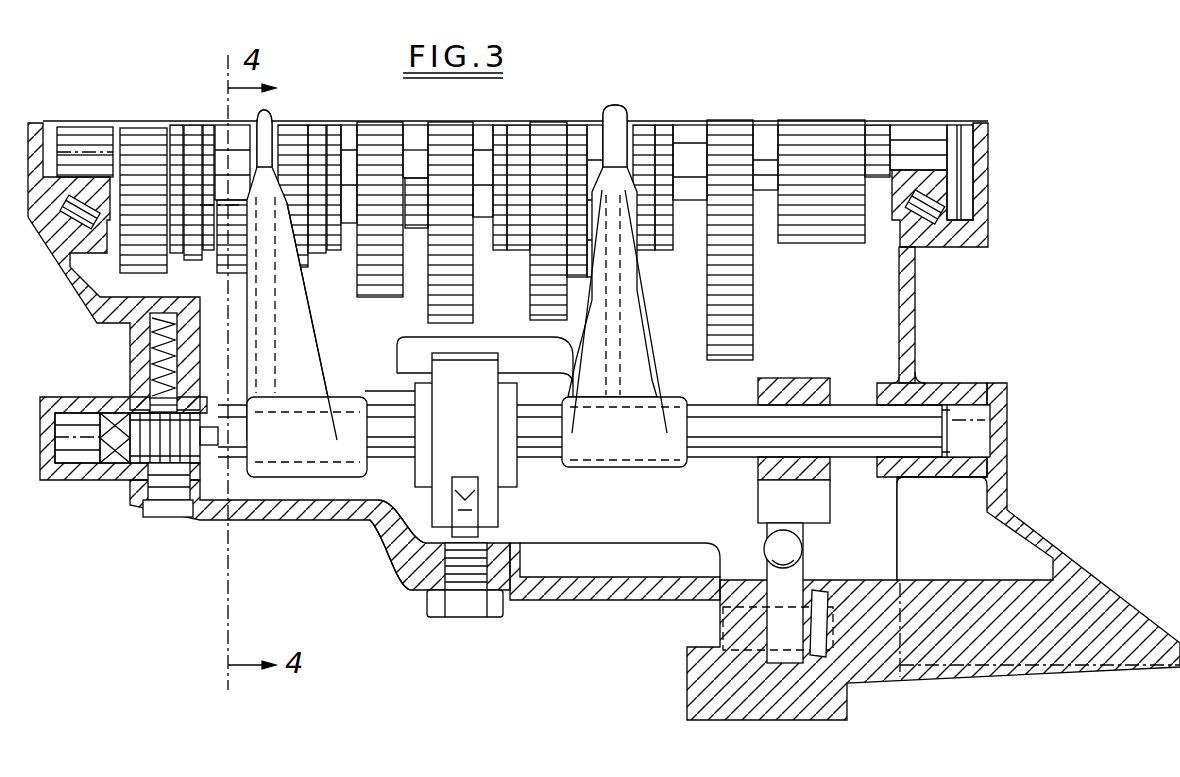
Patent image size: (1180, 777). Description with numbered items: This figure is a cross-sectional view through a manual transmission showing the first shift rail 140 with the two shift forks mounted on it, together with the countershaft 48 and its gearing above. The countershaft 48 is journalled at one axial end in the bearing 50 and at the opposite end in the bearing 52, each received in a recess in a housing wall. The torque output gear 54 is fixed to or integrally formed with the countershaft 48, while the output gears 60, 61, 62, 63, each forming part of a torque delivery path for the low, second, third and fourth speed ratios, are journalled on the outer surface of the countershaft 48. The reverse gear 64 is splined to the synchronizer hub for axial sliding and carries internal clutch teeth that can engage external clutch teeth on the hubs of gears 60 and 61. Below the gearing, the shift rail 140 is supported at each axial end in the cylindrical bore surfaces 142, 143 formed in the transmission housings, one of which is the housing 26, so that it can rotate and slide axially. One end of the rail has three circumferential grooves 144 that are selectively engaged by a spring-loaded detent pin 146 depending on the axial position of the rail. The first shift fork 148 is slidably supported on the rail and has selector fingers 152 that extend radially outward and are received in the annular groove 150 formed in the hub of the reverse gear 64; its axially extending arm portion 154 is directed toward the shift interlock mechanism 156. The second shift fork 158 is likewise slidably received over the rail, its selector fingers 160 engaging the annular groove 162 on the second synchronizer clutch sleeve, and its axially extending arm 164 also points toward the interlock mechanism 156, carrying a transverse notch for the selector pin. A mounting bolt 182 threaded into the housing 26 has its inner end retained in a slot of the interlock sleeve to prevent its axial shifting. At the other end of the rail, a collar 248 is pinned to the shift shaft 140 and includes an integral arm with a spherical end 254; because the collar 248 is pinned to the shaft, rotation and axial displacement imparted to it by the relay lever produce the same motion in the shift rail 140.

The transmission housing 26 is at (310, 520).
The countershaft 48 is at (73, 142).
The bearing 50 is at (930, 215).
The bearing 52 is at (83, 215).
The torque output gear 54 is at (833, 235).
The output gear 60 is at (752, 312).
The output gear 61 is at (455, 137).
The output gear 62 is at (383, 135).
The output gear 63 is at (163, 272).
The reverse gear 64 is at (552, 137).
The first shift rail 140 is at (723, 450).
The cylindrical bore surface 142 is at (975, 415).
The cylindrical bore surface 143 is at (77, 460).
The circumferential grooves 144 is at (160, 500).
The detent pin 146 is at (148, 368).
The first shift fork 148 is at (620, 463).
The annular groove 150 is at (630, 290).
The selector fingers 152 is at (614, 110).
The arm portion 154 is at (497, 345).
The shift interlock mechanism 156 is at (412, 508).
The second shift fork 158 is at (277, 472).
The selector fingers 160 is at (270, 124).
The annular groove 162 is at (290, 288).
The arm 164 is at (362, 390).
The mounting bolt 182 is at (472, 607).
The collar 248 is at (810, 382).
The spherical end 254 is at (803, 548).